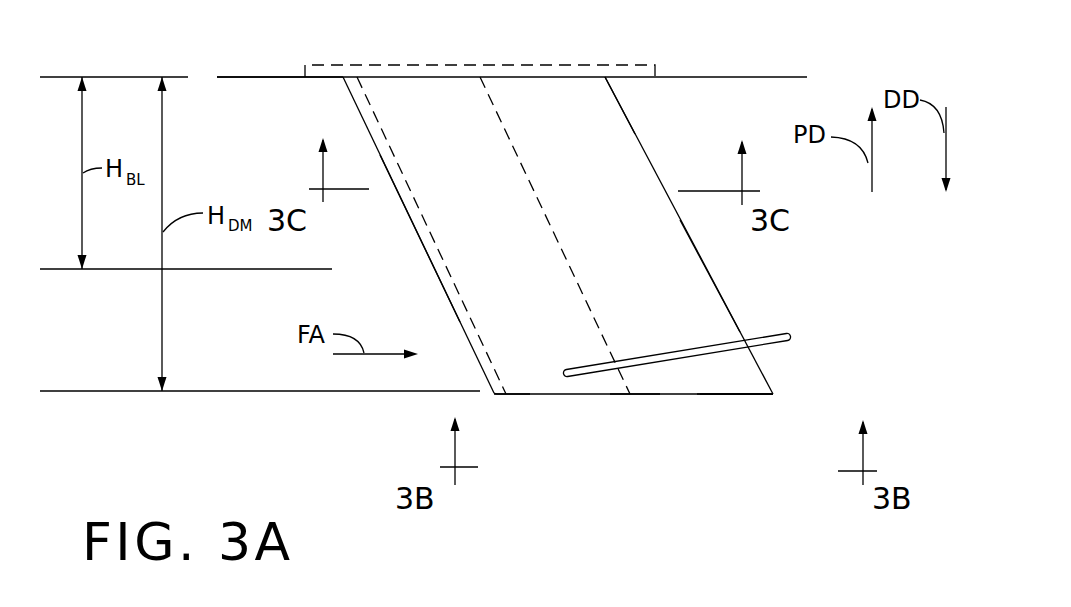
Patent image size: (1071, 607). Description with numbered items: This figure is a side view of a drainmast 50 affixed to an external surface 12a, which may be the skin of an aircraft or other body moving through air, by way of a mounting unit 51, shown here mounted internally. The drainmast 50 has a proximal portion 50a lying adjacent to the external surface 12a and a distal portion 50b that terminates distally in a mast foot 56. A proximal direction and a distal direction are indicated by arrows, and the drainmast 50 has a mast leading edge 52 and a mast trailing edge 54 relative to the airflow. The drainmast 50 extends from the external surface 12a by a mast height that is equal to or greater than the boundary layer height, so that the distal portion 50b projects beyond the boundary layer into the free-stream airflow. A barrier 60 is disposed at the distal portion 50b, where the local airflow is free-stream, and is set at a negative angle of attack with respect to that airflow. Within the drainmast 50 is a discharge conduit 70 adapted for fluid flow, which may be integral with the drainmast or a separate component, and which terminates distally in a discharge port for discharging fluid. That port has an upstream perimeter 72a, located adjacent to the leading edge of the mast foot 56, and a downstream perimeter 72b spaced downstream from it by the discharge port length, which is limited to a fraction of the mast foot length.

The external surface 12a is at (268, 97).
The drainmast 50 is at (664, 276).
The proximal portion 50a is at (582, 88).
The distal portion 50b is at (750, 382).
The mounting unit 51 is at (582, 62).
The mast leading edge 52 is at (422, 295).
The mast trailing edge 54 is at (746, 289).
The mast foot 56 is at (736, 411).
The barrier 60 is at (813, 331).
The discharge conduit 70 is at (527, 285).
The upstream perimeter 72a is at (509, 407).
The downstream perimeter 72b is at (635, 407).